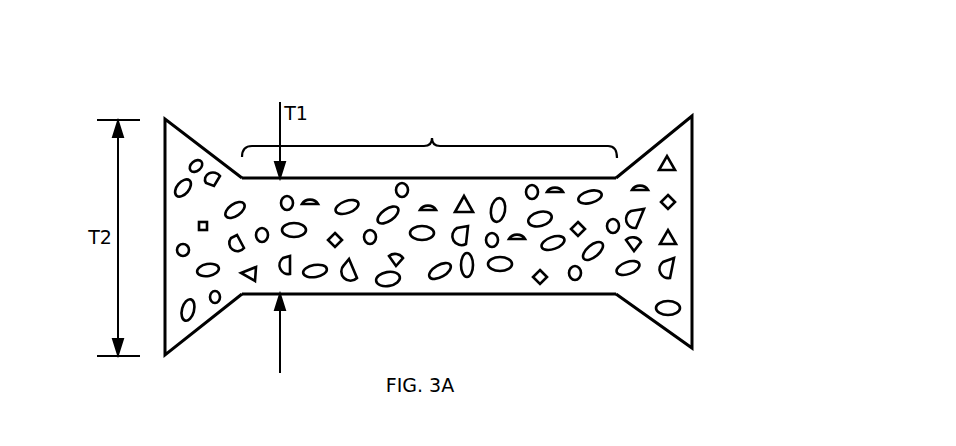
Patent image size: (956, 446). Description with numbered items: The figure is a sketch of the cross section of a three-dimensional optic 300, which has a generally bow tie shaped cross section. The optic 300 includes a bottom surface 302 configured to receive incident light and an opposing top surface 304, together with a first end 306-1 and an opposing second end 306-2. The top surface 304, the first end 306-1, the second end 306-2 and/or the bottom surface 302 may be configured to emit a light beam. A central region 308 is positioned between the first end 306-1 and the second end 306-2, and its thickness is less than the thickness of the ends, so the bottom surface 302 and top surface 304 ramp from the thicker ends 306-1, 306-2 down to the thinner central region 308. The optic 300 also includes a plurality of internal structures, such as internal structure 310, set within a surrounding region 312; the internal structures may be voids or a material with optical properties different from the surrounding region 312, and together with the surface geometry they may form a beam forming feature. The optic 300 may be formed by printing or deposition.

The 3-D optic 300 is at (468, 218).
The bottom surface 302 is at (456, 297).
The top surface 304 is at (479, 172).
The first end 306-1 is at (699, 323).
The second end 306-2 is at (157, 131).
The central region 308 is at (433, 134).
The internal structure 310 is at (661, 166).
The surrounding region 312 is at (680, 207).